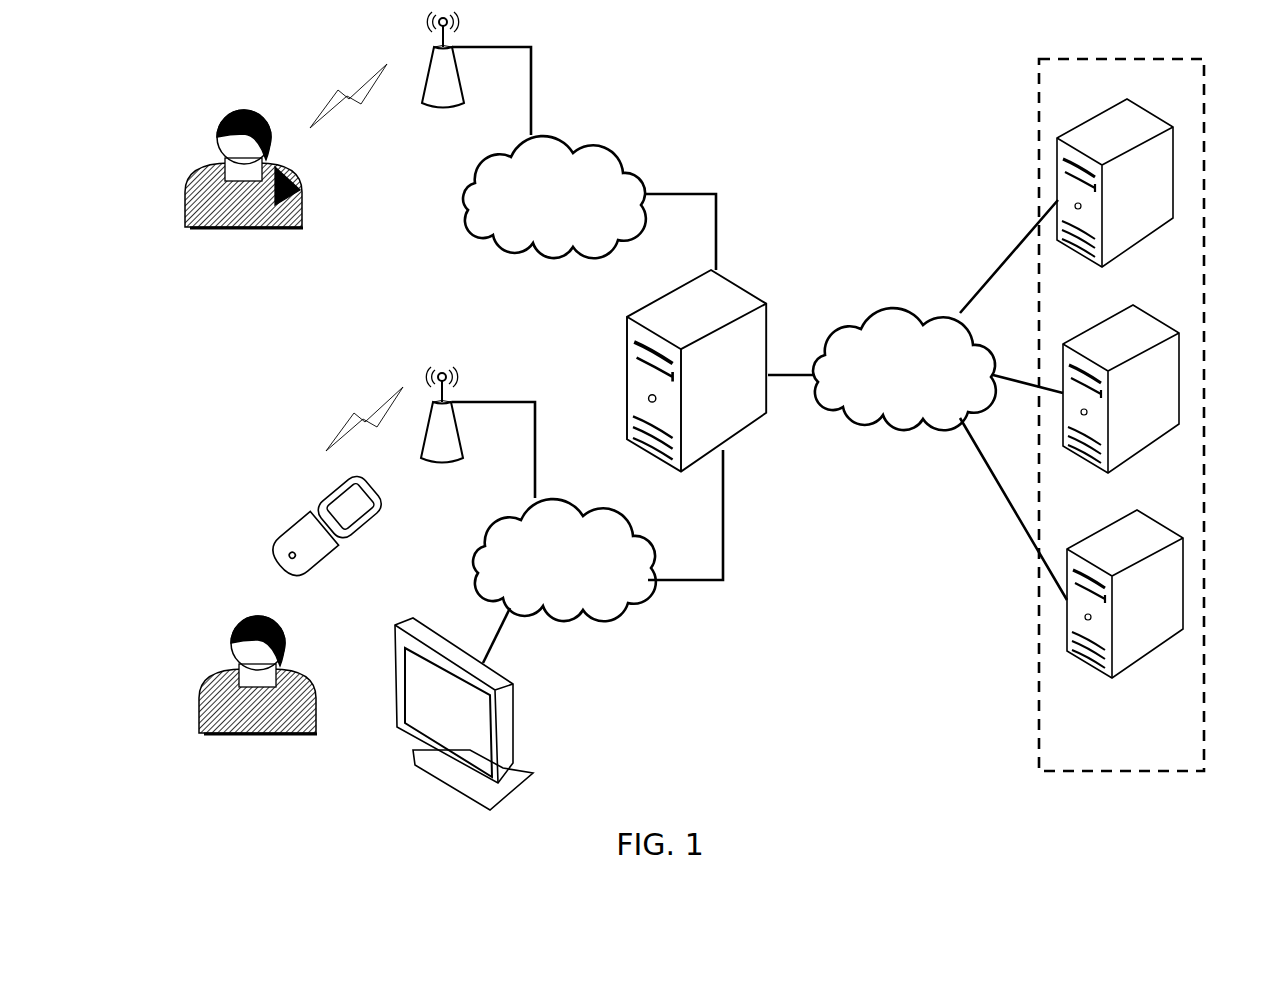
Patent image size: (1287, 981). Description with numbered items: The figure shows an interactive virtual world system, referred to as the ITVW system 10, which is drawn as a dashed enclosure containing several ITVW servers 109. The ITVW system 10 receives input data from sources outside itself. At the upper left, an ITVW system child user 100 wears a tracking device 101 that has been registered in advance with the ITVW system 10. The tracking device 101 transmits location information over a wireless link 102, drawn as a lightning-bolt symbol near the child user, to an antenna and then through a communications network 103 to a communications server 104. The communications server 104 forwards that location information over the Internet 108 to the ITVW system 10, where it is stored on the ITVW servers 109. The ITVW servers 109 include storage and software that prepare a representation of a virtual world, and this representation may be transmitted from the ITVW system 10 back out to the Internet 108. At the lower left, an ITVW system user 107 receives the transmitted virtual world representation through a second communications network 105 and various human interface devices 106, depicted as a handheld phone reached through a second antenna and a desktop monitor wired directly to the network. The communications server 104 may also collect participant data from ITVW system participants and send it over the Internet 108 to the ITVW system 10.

The ITVW system 10 is at (1137, 744).
The ITVW system child user 100 is at (205, 168).
The tracking device 101 is at (300, 181).
The wireless link 102 is at (333, 92).
The communications network 103 is at (557, 138).
The communications server 104 is at (745, 283).
The communications network 105 is at (560, 499).
The human interface devices 106 is at (320, 491).
The ITVW system user 107 is at (215, 677).
The Internet 108 is at (893, 308).
The ITVW servers 109 is at (1173, 171).